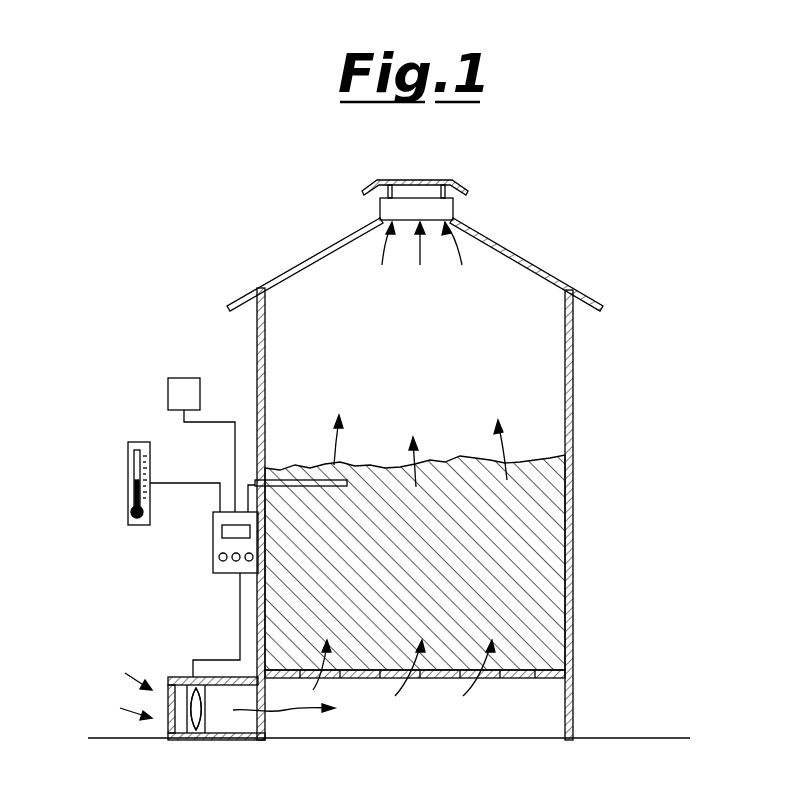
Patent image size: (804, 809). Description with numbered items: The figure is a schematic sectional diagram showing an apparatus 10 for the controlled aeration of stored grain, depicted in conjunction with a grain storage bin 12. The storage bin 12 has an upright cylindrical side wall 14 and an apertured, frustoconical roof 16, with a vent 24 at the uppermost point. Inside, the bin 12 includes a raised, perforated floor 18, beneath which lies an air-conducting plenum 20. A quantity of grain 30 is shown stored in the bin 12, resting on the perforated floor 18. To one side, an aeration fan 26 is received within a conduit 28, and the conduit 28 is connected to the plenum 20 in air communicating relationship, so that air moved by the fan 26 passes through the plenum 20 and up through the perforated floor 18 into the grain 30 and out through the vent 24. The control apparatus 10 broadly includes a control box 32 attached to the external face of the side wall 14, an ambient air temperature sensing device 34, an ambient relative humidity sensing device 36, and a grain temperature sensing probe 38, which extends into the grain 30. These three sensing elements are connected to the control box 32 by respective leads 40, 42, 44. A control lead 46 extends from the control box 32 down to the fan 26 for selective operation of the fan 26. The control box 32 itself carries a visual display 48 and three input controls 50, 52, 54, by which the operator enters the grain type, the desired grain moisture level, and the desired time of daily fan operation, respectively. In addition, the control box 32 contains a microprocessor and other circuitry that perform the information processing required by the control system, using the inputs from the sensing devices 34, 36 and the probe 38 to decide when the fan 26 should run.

The control apparatus 10 is at (178, 562).
The grain storage bin 12 is at (598, 262).
The side wall 14 is at (573, 538).
The roof 16 is at (515, 247).
The perforated floor 18 is at (530, 679).
The plenum 20 is at (545, 712).
The vent 24 is at (436, 180).
The aeration fan 26 is at (190, 678).
The conduit 28 is at (170, 677).
The grain 30 is at (560, 505).
The control box 32 is at (213, 535).
The ambient air temperature sensing device 34 is at (128, 483).
The ambient relative humidity sensing device 36 is at (168, 378).
The grain temperature sensing probe 38 is at (297, 480).
The lead 40 is at (182, 482).
The lead 42 is at (235, 456).
The lead 44 is at (248, 485).
The control lead 46 is at (240, 633).
The visual display 48 is at (222, 528).
The input control 50 is at (221, 562).
The input control 52 is at (235, 562).
The input control 54 is at (248, 562).